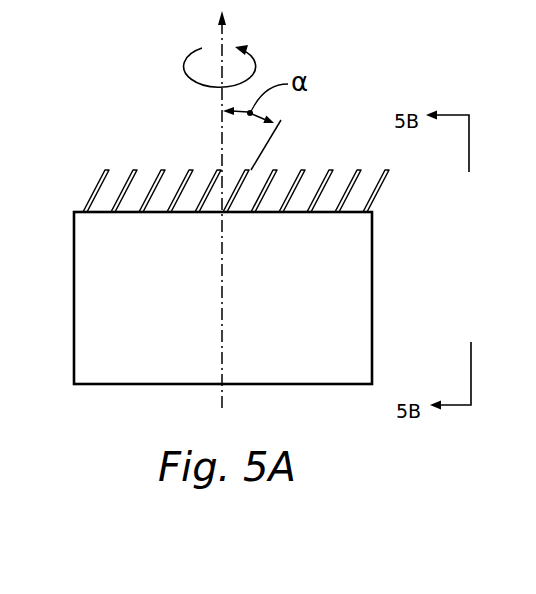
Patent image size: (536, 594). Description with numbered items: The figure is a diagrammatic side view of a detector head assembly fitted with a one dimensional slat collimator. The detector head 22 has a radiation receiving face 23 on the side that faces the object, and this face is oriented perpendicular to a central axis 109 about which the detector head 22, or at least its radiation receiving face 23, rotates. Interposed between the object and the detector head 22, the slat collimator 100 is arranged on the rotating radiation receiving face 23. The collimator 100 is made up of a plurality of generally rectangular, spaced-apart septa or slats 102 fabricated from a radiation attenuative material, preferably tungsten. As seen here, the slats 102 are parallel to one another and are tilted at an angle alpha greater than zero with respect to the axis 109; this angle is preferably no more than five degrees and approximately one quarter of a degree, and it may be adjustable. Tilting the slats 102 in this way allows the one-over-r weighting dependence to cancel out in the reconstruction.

The detector head 22 is at (344, 102).
The radiation receiving face 23 is at (320, 212).
The one dimensional slat collimator 100 is at (269, 173).
The slats 102 is at (130, 186).
The central axis 109 is at (221, 133).